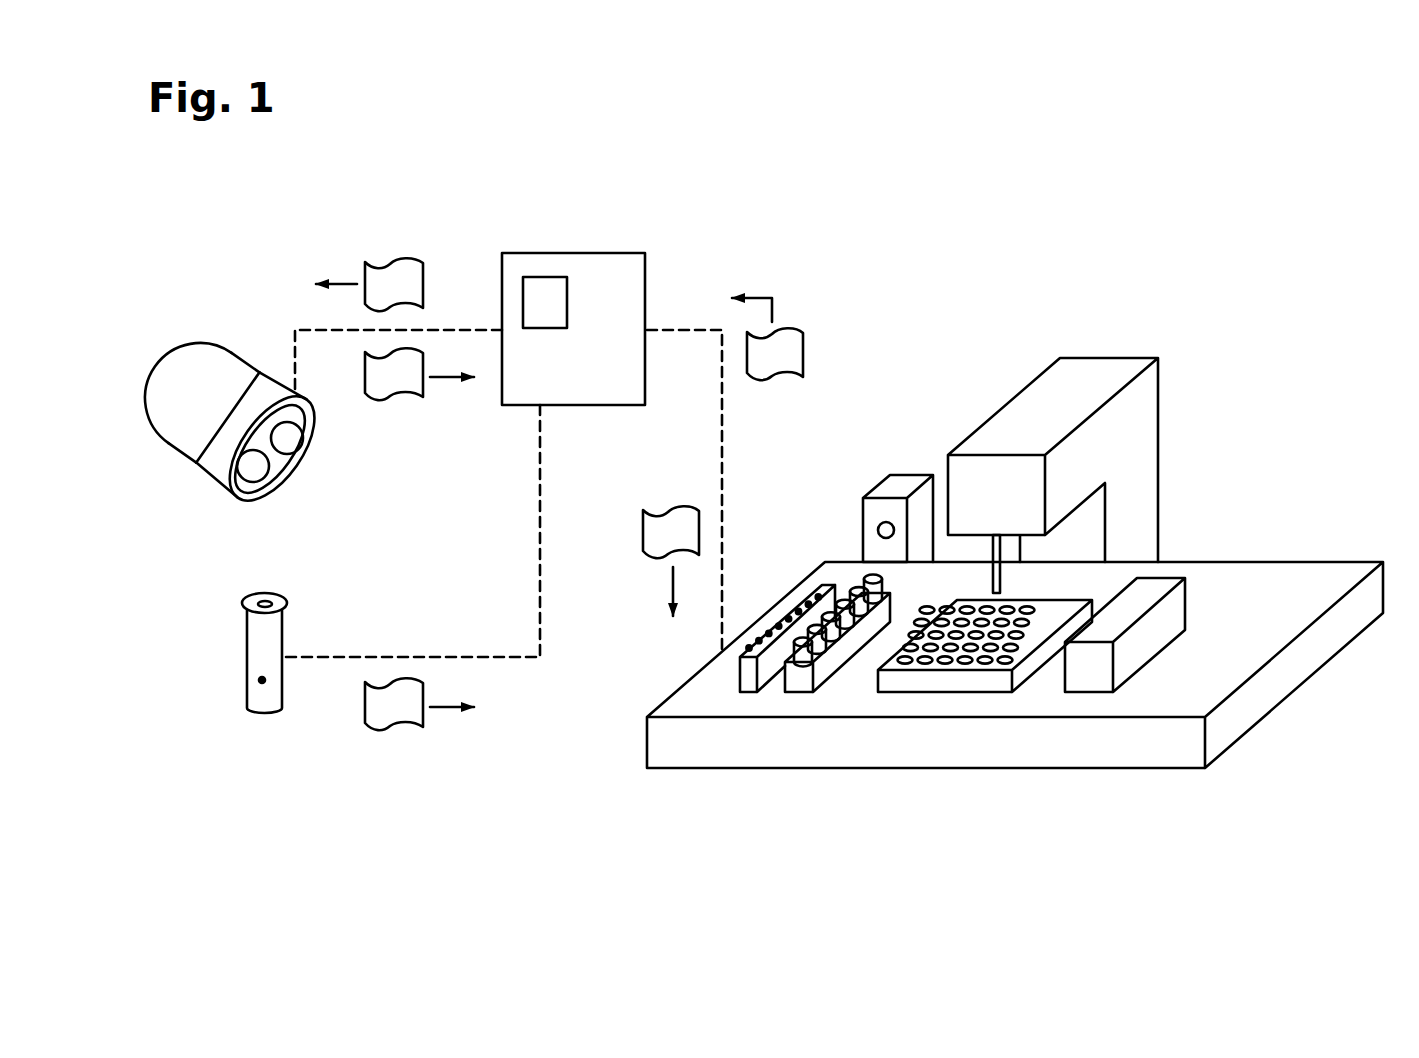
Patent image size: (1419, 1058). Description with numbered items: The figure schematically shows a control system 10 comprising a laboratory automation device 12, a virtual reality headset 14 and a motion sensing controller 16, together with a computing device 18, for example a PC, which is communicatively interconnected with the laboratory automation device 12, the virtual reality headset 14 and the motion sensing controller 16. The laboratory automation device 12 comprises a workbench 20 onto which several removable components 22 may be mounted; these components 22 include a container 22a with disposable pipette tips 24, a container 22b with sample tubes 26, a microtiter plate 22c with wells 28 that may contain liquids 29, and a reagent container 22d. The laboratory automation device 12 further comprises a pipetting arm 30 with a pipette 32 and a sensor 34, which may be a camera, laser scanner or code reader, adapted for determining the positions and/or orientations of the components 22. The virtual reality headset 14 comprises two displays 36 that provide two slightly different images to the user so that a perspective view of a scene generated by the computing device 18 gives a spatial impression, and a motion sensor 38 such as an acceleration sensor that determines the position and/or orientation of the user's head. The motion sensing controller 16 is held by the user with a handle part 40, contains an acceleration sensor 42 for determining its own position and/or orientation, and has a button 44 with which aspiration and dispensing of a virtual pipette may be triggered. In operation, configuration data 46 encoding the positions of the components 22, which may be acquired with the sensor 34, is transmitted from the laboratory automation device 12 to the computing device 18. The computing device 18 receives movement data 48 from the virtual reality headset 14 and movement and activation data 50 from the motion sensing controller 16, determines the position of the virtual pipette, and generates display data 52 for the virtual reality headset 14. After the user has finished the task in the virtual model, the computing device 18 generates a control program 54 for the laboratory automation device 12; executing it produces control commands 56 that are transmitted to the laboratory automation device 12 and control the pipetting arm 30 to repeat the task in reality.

The control system 10 is at (1200, 170).
The laboratory automation device 12 is at (1015, 584).
The virtual reality headset 14 is at (222, 400).
The motion sensing controller 16 is at (222, 702).
The computing device 18 is at (573, 284).
The workbench 20 is at (1160, 748).
The removable components 22 is at (987, 685).
The container with disposable pipette tips 22a is at (778, 685).
The container with sample tubes 22b is at (837, 685).
The microtiter plate 22c is at (983, 736).
The reagent container 22d is at (1083, 692).
The disposable pipette tips 24 is at (812, 590).
The sample tubes 26 is at (858, 588).
The wells 28 is at (983, 736).
The liquids 29 is at (925, 660).
The pipetting arm 30 is at (1100, 475).
The pipette 32 is at (997, 578).
The sensor 34 is at (910, 475).
The displays 36 is at (288, 440).
The motion sensor 38 is at (208, 458).
The handle part 40 is at (247, 645).
The acceleration sensor 42 is at (260, 680).
The button 44 is at (262, 603).
The configuration data 46 is at (773, 383).
The movement data 48 is at (390, 398).
The movement and activation data 50 is at (386, 730).
The display data 52 is at (388, 262).
The control program 54 is at (547, 277).
The control commands 56 is at (673, 510).